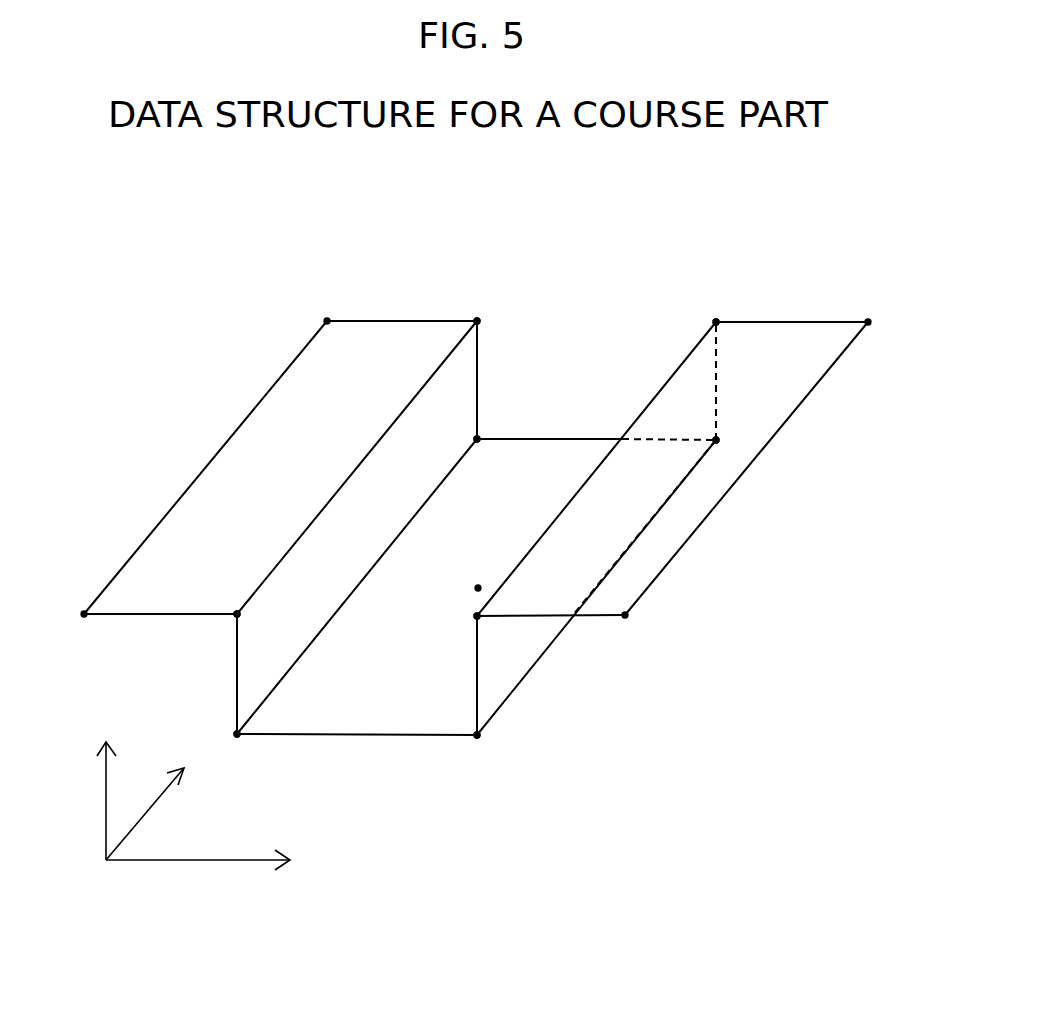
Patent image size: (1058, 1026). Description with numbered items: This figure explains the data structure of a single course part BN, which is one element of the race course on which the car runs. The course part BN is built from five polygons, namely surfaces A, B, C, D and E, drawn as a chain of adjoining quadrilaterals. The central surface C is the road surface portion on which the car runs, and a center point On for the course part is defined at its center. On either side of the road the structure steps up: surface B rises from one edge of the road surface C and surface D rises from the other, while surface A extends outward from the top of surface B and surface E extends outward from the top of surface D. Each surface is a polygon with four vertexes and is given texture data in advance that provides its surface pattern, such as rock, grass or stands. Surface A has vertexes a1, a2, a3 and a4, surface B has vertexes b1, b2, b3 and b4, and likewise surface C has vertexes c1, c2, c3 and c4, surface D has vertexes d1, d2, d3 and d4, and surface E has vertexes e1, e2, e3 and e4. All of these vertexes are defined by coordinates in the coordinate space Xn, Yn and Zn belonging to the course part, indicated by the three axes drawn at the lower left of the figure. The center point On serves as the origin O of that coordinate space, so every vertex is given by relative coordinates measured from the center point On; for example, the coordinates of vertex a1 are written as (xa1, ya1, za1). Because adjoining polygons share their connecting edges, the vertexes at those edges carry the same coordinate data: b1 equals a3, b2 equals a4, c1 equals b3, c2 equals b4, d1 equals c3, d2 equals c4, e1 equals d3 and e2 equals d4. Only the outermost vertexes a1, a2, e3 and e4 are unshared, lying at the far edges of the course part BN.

The surface A is at (672, 469).
The surface B is at (596, 528).
The surface C is at (476, 587).
The surface D is at (357, 527).
The surface E is at (280, 467).
The vertex a1 is at (696, 636).
The vertex a2 is at (885, 323).
The vertex a3 is at (477, 616).
The vertex a4 is at (716, 322).
The vertex b1 is at (433, 633).
The vertex b2 is at (701, 301).
The vertex b3 is at (477, 735).
The vertex b4 is at (716, 440).
The vertex c1 is at (483, 754).
The vertex c2 is at (710, 427).
The vertex c3 is at (233, 755).
The vertex c4 is at (491, 422).
The vertex d1 is at (225, 782).
The vertex d2 is at (509, 404).
The vertex d3 is at (224, 629).
The vertex d4 is at (490, 308).
The vertex e1 is at (209, 651).
The vertex e2 is at (504, 293).
The vertex e3 is at (70, 613).
The vertex e4 is at (326, 308).
The center point On is at (483, 576).
The course part BN is at (143, 440).
The X coordinate axis Xn is at (202, 876).
The Y coordinate axis Yn is at (96, 801).
The Z coordinate axis Zn is at (145, 811).
The origin O is at (87, 881).